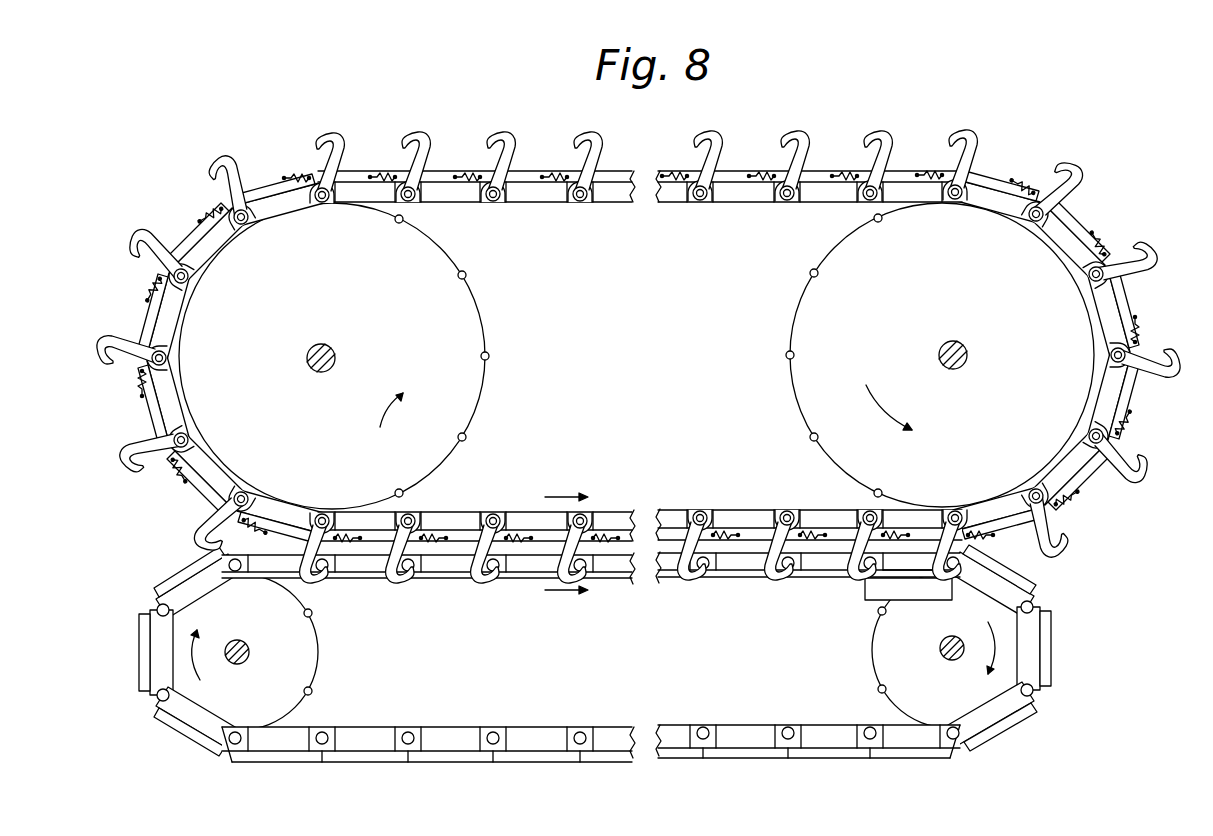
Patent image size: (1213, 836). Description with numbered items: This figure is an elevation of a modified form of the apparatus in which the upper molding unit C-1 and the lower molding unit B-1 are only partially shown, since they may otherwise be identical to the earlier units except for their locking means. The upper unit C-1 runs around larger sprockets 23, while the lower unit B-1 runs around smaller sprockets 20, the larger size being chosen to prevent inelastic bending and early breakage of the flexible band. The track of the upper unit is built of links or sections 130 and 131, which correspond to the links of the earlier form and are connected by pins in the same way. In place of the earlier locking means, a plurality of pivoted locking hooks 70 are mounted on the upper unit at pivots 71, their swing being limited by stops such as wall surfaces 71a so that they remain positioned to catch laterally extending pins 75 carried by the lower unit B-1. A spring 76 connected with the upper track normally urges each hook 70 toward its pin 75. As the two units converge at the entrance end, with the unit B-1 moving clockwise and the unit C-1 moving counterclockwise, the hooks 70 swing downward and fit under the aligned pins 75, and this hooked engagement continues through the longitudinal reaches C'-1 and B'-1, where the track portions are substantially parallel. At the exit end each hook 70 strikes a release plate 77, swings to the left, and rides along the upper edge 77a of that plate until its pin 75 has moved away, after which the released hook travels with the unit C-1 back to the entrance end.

The smaller sprocket 20 is at (278, 688).
The larger sprocket 23 is at (412, 308).
The pivoted locking hook 70 is at (135, 470).
The pivot 71 is at (619, 356).
The wall surface 71a is at (328, 204).
The laterally extending pin 75 is at (250, 574).
The spring 76 is at (170, 473).
The release plate 77 is at (863, 587).
The upper edge of release plate 77a is at (895, 566).
The link or section 130 is at (177, 313).
The link or section 131 is at (168, 388).
The upper molding unit C-1 is at (176, 224).
The longitudinal reach of unit C-1 C'-1 is at (481, 501).
The lower molding unit B-1 is at (187, 744).
The longitudinal reach of unit B-1 B'-1 is at (835, 651).